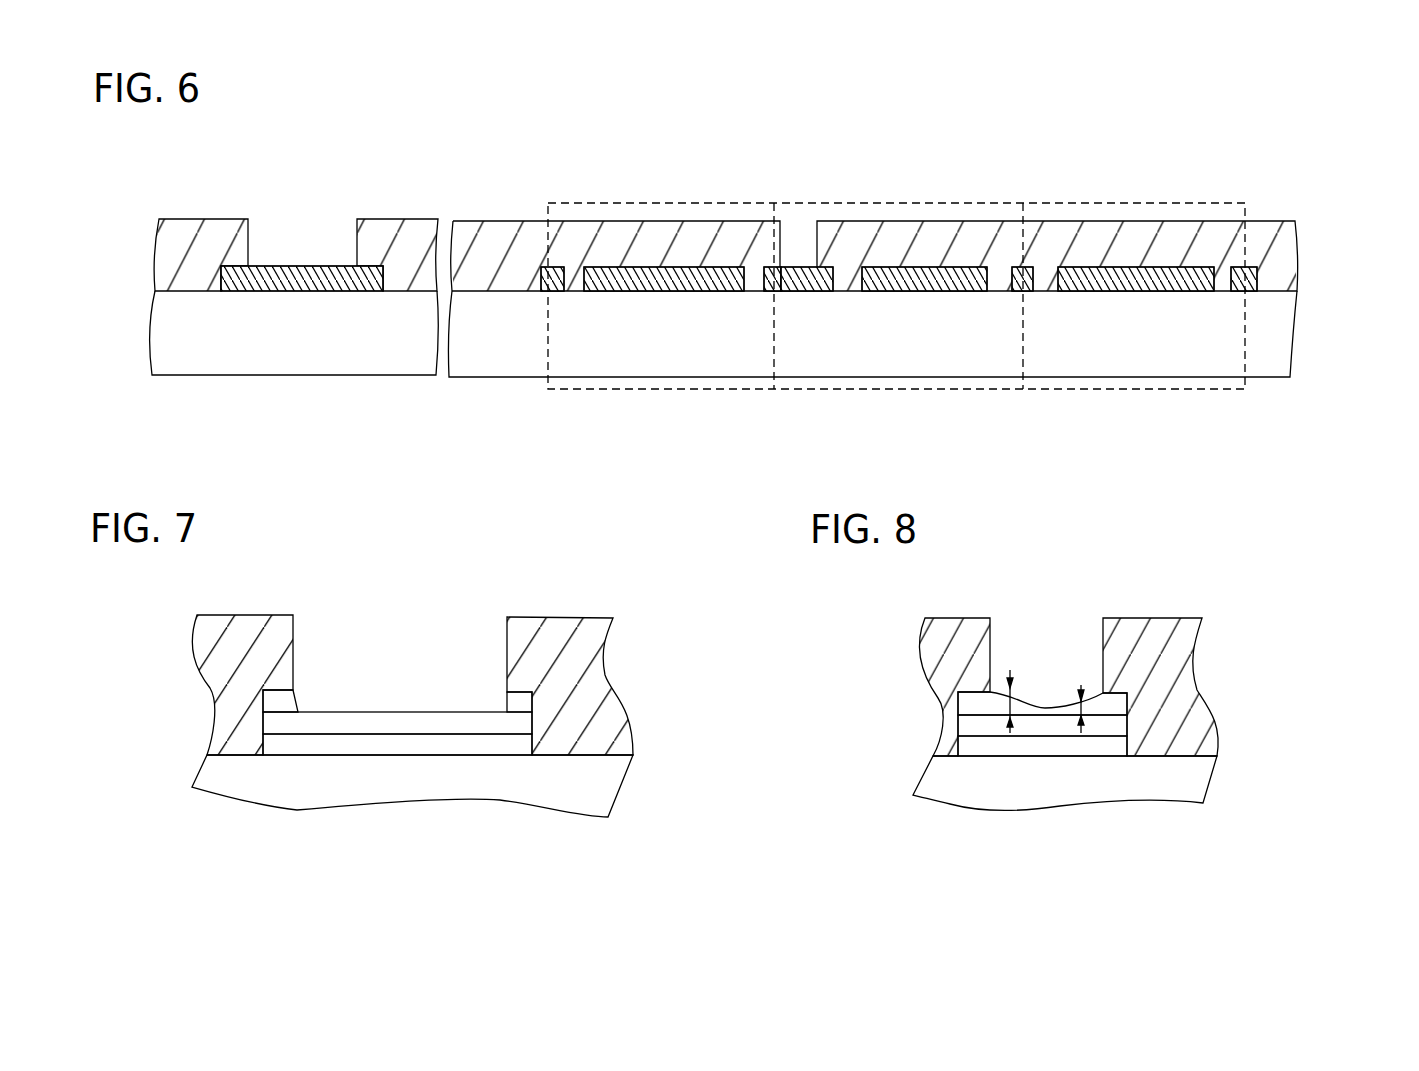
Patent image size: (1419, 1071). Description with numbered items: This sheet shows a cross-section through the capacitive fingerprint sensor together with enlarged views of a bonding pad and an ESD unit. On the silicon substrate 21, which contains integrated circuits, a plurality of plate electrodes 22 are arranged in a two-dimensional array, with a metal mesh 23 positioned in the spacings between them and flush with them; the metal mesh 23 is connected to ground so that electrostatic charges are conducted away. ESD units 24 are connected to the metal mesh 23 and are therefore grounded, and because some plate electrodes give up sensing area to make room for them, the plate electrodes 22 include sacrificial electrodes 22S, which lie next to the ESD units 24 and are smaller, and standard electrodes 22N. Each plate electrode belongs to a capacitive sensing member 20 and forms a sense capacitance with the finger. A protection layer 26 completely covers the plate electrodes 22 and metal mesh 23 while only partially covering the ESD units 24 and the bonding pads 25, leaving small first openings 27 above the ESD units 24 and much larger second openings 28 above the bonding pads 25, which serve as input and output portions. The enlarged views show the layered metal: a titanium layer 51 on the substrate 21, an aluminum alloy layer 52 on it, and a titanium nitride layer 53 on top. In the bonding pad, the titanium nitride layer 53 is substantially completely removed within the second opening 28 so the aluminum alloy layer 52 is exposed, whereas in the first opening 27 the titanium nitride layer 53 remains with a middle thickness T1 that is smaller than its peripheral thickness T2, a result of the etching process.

In FIG. 6, the capacitive sensing member 20 is at (603, 203).
In FIG. 6, the silicon substrate 21 is at (1285, 321).
In FIG. 7, the silicon substrate 21 is at (615, 773).
In FIG. 8, the silicon substrate 21 is at (1197, 775).
In FIG. 8, the plate electrodes 22 is at (965, 722).
In FIG. 6, the standard electrodes 22N is at (661, 292).
In FIG. 6, the sacrificial electrodes 22S is at (915, 293).
In FIG. 6, the metal mesh 23 is at (553, 292).
In FIG. 6, the ESD unit 24 is at (822, 293).
In FIG. 6, the bonding pad 25 is at (308, 291).
In FIG. 7, the bonding pad 25 is at (317, 721).
In FIG. 6, the protection layer 26 is at (1290, 267).
In FIG. 7, the protection layer 26 is at (620, 717).
In FIG. 8, the protection layer 26 is at (1202, 720).
In FIG. 6, the first opening 27 is at (805, 247).
In FIG. 8, the first opening 27 is at (1047, 655).
In FIG. 6, the second opening 28 is at (292, 242).
In FIG. 7, the second opening 28 is at (395, 667).
In FIG. 7, the titanium layer 51 is at (272, 738).
In FIG. 8, the titanium layer 51 is at (967, 748).
In FIG. 7, the aluminum alloy layer 52 is at (278, 722).
In FIG. 8, the aluminum alloy layer 52 is at (967, 730).
In FIG. 7, the titanium nitride layer 53 is at (268, 697).
In FIG. 8, the titanium nitride layer 53 is at (967, 702).
In FIG. 8, the middle thickness T1 is at (1081, 696).
In FIG. 8, the peripheral thickness T2 is at (1012, 691).